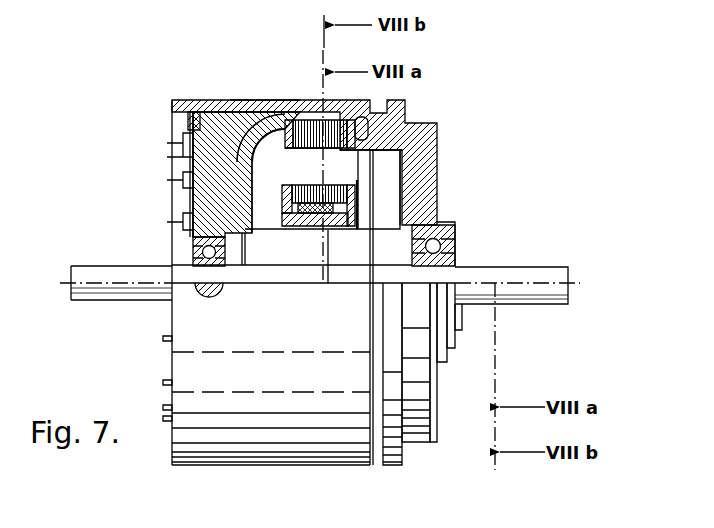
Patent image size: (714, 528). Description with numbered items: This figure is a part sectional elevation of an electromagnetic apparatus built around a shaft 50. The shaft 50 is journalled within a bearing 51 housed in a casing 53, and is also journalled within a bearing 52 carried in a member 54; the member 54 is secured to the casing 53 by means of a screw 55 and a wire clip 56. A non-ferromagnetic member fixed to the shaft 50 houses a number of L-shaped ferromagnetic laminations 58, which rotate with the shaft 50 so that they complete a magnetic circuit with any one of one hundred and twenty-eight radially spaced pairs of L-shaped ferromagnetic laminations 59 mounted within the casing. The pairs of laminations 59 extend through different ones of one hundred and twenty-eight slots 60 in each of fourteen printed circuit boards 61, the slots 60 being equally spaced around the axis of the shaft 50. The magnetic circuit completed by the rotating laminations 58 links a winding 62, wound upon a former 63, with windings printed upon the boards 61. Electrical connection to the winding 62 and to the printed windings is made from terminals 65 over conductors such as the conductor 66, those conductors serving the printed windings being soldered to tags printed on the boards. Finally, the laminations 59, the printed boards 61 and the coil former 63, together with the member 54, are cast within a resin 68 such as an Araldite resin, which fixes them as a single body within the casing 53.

The shaft 50 is at (530, 280).
The bearing 51 is at (456, 234).
The bearing 52 is at (205, 250).
The casing 53 is at (432, 133).
The member 54 is at (212, 201).
The screw 55 is at (211, 290).
The wire clip 56 is at (192, 121).
The L-shaped ferromagnetic laminations 58 is at (382, 203).
The L-shaped ferromagnetic laminations 59 is at (392, 162).
The slots 60 is at (322, 149).
The printed circuit boards 61 is at (321, 117).
The winding 62 is at (330, 228).
The former 63 is at (295, 228).
The terminals 65 is at (167, 180).
The conductor 66 is at (275, 110).
The resin 68 is at (250, 110).